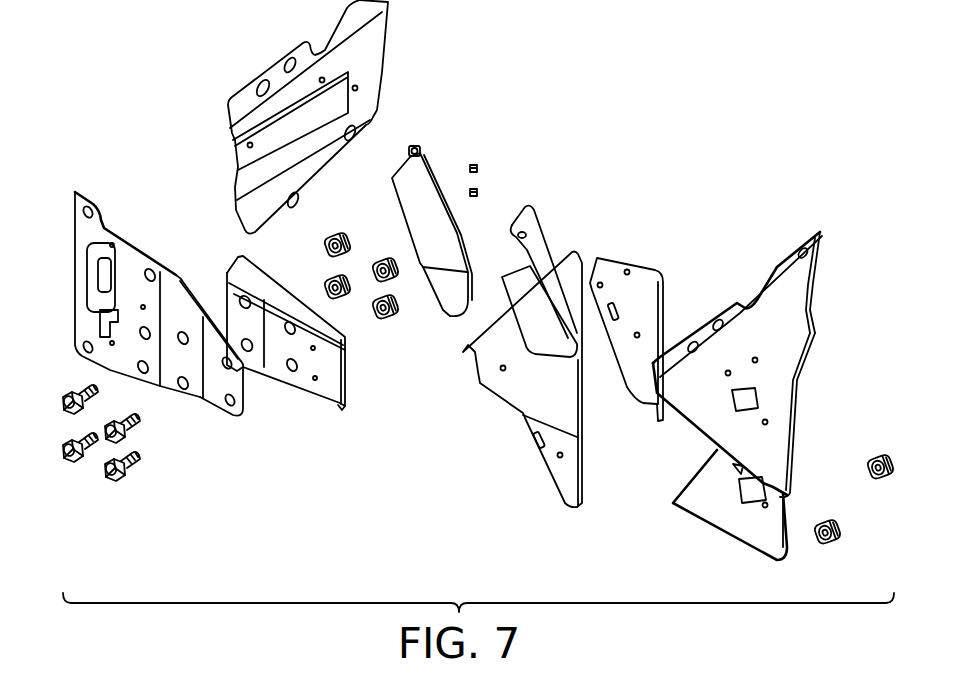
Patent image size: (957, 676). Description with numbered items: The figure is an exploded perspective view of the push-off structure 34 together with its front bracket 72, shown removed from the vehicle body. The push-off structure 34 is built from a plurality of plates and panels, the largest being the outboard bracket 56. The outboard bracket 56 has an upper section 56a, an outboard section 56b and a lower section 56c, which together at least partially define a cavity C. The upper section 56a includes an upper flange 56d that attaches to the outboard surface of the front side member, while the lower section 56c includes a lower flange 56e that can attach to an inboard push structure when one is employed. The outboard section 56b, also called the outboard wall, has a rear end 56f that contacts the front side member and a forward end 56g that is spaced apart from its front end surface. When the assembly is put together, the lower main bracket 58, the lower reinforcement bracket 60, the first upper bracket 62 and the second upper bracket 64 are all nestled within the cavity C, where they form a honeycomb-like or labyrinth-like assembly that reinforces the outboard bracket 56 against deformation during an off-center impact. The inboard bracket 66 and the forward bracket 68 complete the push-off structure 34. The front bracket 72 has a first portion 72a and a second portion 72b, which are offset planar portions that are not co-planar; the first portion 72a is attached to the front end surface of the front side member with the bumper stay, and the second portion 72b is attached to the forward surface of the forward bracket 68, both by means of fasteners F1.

The push-off structure 34 is at (836, 188).
The outboard bracket 56 is at (759, 392).
The upper section 56a is at (780, 372).
The outboard section 56b is at (798, 400).
The lower section 56c is at (710, 497).
The upper flange 56d is at (786, 268).
The lower flange 56e is at (673, 503).
The rear end 56f is at (823, 268).
The forward end 56g is at (795, 543).
The lower main bracket 58 is at (582, 483).
The lower reinforcement bracket 60 is at (422, 183).
The first upper bracket 62 is at (668, 285).
The second upper bracket 64 is at (538, 247).
The inboard bracket 66 is at (367, 54).
The forward bracket 68 is at (325, 387).
The front bracket 72 is at (159, 312).
The first portion 72a is at (127, 270).
The second portion 72b is at (218, 377).
The fasteners F1 is at (88, 498).
The cavity C is at (758, 517).